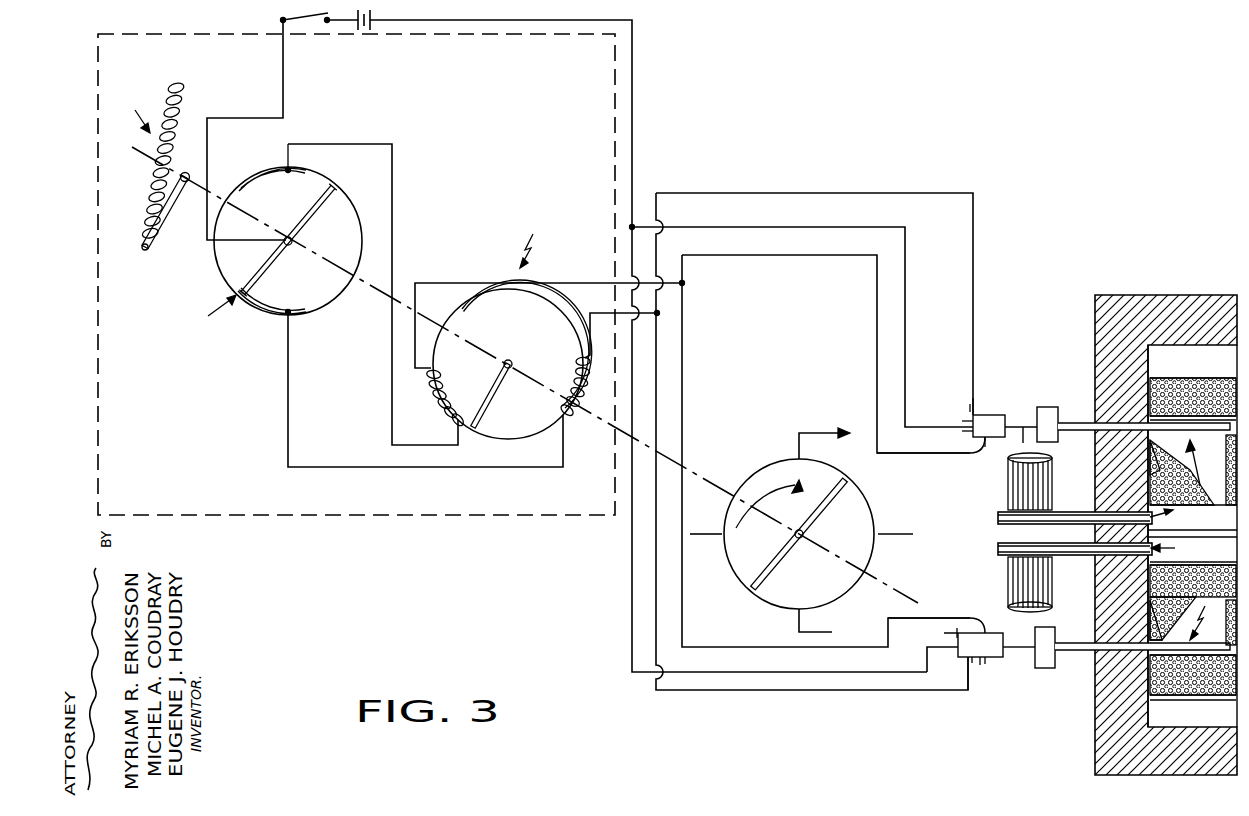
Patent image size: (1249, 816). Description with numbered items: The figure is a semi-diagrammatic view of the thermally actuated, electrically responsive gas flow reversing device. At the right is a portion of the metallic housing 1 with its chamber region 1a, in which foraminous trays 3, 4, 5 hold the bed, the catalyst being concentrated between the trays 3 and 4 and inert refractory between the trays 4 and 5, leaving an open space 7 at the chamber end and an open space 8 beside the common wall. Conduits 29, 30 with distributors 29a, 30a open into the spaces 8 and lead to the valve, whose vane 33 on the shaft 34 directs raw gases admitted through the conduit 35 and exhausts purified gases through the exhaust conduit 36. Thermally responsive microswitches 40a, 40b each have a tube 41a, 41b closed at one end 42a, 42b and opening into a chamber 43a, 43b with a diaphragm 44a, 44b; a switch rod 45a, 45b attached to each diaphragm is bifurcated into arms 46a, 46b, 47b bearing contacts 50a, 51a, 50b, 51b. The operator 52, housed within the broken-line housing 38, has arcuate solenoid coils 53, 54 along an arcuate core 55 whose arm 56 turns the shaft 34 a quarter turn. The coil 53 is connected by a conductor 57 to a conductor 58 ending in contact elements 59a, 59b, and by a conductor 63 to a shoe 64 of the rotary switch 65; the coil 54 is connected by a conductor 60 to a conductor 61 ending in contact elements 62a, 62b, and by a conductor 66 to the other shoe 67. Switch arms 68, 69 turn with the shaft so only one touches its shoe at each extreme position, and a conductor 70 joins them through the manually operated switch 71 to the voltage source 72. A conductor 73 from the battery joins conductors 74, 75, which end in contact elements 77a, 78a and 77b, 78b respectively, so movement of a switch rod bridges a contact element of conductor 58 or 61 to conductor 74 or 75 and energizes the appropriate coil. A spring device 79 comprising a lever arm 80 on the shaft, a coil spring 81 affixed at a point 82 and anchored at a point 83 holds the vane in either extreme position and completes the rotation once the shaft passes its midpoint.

The metallic housing 1 is at (1195, 325).
The reactor chamber 1a is at (1147, 295).
The foraminous tray 3 is at (1168, 381).
The foraminous tray 4 is at (1214, 372).
The foraminous tray 5 is at (1217, 512).
The open space 7 is at (1191, 712).
The open space 8 is at (1192, 534).
The conduit 29 is at (812, 432).
The distributor 29a is at (1052, 519).
The conduit 30 is at (826, 632).
The distributor 30a is at (1052, 550).
The vane 33 is at (830, 508).
The shaft 34 is at (289, 236).
The conduit 35 is at (716, 533).
The exhaust conduit 36 is at (901, 521).
The housing 38 is at (150, 34).
The thermally responsive microswitch 40a is at (1191, 472).
The thermally responsive microswitch 40b is at (1193, 602).
The tube 41a is at (1167, 457).
The tube 41b is at (1171, 620).
The closed end 42a is at (1218, 470).
The closed end 42b is at (1232, 642).
The chamber 43a is at (1053, 407).
The chamber 43b is at (1052, 627).
The diaphragm 44a is at (1040, 407).
The diaphragm 44b is at (1037, 662).
The switch rod 45a is at (1022, 437).
The switch rod 45b is at (1020, 650).
The arm 46a is at (974, 415).
The arm 46b is at (986, 635).
The arm 47b is at (981, 658).
The electrical contact 50a is at (970, 410).
The electrical contact 50b is at (933, 633).
The electrical contact 51a is at (986, 445).
The electrical contact 51b is at (986, 660).
The operator 52 is at (398, 303).
The arcuate solenoid coil 53 is at (441, 413).
The arcuate solenoid coil 54 is at (569, 418).
The arcuate core 55 is at (503, 440).
The arm 56 is at (488, 409).
The conductor 57 is at (447, 283).
The conductor 58 is at (685, 300).
The contact element 59a is at (985, 455).
The contact element 59b is at (976, 618).
The conductor 60 is at (594, 302).
The conductor 61 is at (843, 193).
The contact element 62a is at (975, 400).
The contact element 62b is at (967, 675).
The conductor 63 is at (393, 244).
The shoe 64 is at (266, 167).
The rotary switch 65 is at (211, 309).
The conductor 66 is at (290, 396).
The shoe 67 is at (267, 310).
The switch arm 68 is at (308, 214).
The switch arm 69 is at (259, 277).
The conductor 70 is at (284, 96).
The manually operated switch 71 is at (283, 18).
The voltage source 72 is at (372, 27).
The conductor 73 is at (633, 90).
The conductor 74 is at (865, 227).
The conductor 75 is at (631, 246).
The contact element 77a is at (973, 421).
The contact element 77b is at (957, 650).
The contact element 78a is at (975, 431).
The contact element 78b is at (972, 658).
The spring device 79 is at (133, 111).
The lever arm 80 is at (153, 233).
The coil spring 81 is at (153, 172).
The spring attachment point 82 is at (143, 251).
The anchor point 83 is at (181, 88).